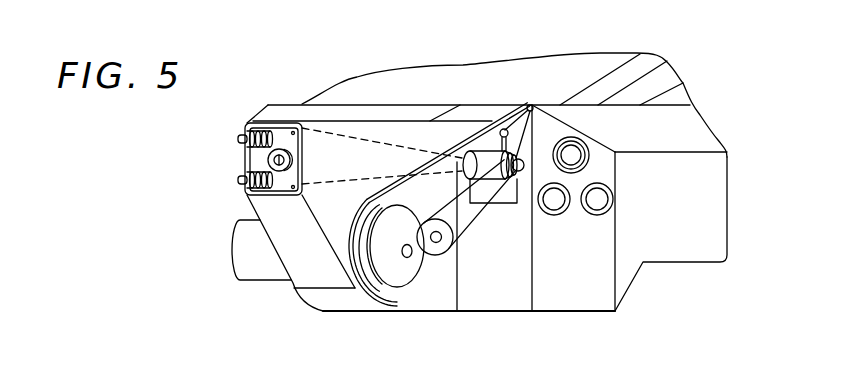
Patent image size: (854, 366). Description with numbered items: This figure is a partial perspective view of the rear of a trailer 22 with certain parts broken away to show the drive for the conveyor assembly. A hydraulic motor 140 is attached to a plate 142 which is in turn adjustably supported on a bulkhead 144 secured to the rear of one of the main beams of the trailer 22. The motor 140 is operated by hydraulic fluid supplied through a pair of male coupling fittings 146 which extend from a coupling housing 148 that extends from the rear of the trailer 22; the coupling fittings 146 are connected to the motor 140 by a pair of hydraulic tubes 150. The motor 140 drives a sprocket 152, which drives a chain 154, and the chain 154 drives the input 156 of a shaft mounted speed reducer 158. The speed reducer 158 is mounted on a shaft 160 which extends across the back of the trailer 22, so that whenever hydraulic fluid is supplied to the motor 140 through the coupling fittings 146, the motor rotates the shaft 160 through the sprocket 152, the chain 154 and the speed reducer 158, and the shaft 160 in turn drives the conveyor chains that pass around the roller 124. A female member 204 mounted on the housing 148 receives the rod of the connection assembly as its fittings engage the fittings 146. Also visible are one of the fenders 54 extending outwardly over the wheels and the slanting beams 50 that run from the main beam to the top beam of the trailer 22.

The trailer 22 is at (340, 70).
The slanting beams 50 is at (636, 66).
The fenders 54 is at (703, 217).
The roller 124 is at (250, 250).
The hydraulic motor 140 is at (477, 154).
The plate 142 is at (503, 199).
The bulkhead 144 is at (512, 277).
The male coupling fittings 146 is at (238, 141).
The coupling housing 148 is at (265, 209).
The hydraulic tubes 150 is at (382, 156).
The sprocket 152 is at (531, 106).
The chain 154 is at (456, 191).
The input 156 is at (437, 243).
The shaft mounted speed reducer 158 is at (397, 275).
The shaft 160 is at (407, 258).
The female member 204 is at (294, 172).